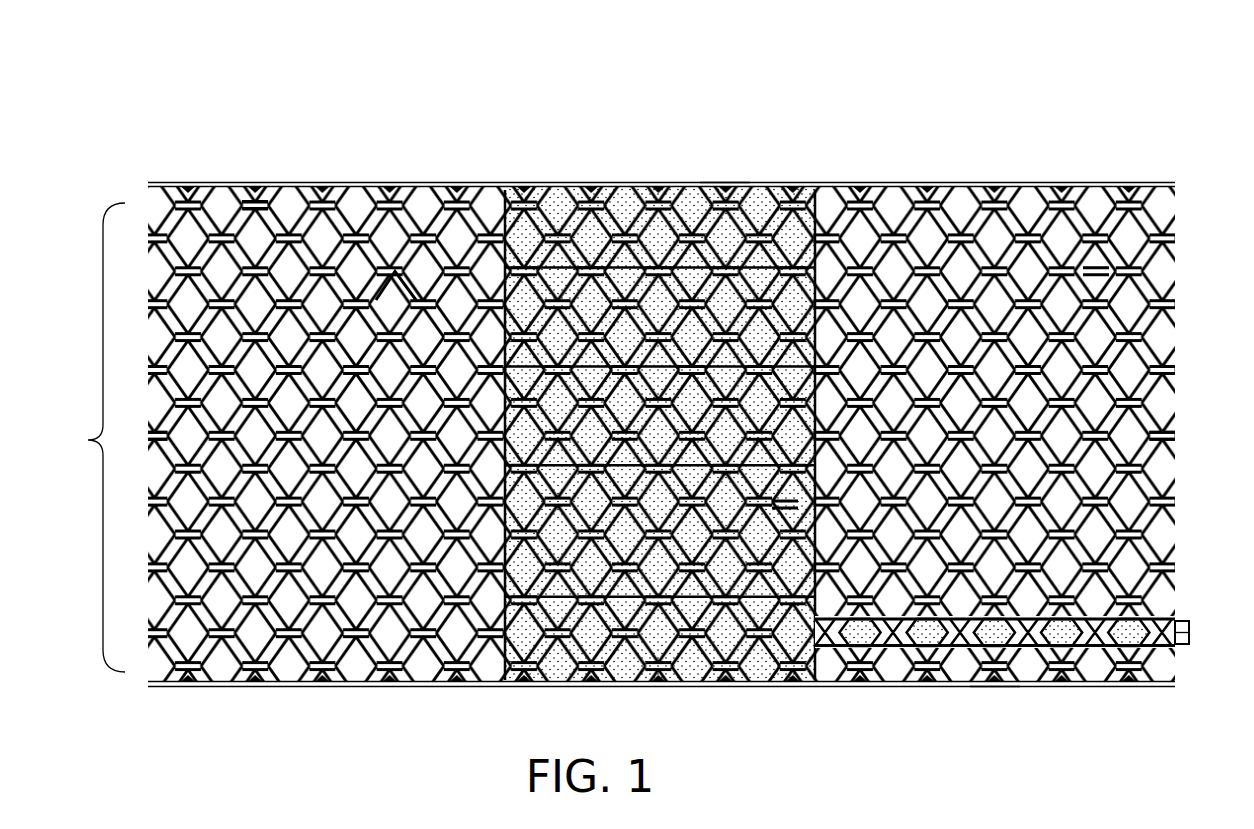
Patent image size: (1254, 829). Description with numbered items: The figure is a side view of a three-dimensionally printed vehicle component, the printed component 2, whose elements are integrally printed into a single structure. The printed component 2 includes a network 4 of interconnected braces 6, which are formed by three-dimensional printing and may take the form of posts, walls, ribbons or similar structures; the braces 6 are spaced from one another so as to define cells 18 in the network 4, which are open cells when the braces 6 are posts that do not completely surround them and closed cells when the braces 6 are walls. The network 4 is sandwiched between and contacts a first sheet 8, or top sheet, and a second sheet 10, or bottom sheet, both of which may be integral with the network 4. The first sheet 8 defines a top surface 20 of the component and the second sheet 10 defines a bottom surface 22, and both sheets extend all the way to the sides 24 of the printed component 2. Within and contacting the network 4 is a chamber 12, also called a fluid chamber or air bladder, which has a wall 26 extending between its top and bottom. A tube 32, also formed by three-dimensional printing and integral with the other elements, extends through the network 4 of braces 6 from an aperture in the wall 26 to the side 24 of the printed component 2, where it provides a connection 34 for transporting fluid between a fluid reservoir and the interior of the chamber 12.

The printed component 2 is at (72, 107).
The network 4 is at (92, 437).
The braces 6 is at (287, 198).
The first sheet 8 is at (1075, 182).
The second sheet 10 is at (862, 689).
The chamber 12 is at (657, 300).
The cells 18 is at (392, 300).
The top surface 20 is at (723, 180).
The bottom surface 22 is at (994, 691).
The sides 24 is at (149, 433).
The wall 26 is at (788, 508).
The tube 32 is at (1130, 642).
The connection 34 is at (1192, 630).